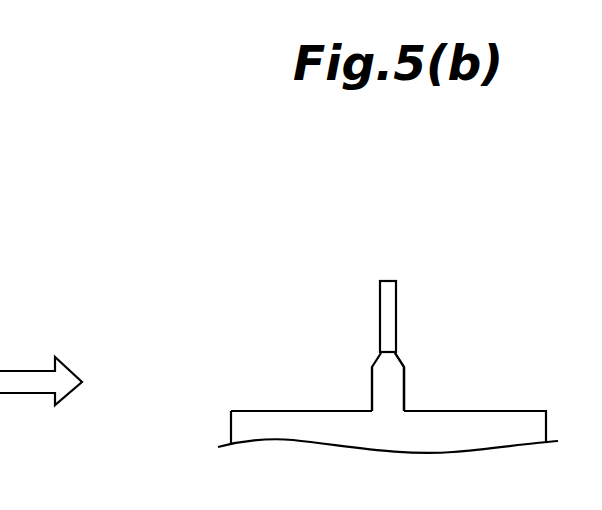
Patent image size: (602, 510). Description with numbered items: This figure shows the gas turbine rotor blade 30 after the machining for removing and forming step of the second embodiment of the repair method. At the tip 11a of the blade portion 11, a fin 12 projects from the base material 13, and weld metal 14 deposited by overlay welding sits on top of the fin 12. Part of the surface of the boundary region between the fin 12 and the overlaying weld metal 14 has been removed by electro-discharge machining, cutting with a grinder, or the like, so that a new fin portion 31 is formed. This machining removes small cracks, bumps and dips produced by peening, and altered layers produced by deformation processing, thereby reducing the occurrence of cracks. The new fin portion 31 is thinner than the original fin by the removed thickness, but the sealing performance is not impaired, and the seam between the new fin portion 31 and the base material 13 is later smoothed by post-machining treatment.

The gas turbine rotor blade 30 is at (453, 264).
The weld metal 14 is at (380, 300).
The new fin portion 31 is at (396, 350).
The fin 12 is at (378, 387).
The tip 11a is at (248, 410).
The blade portion 11 is at (245, 434).
The base material 13 is at (155, 313).